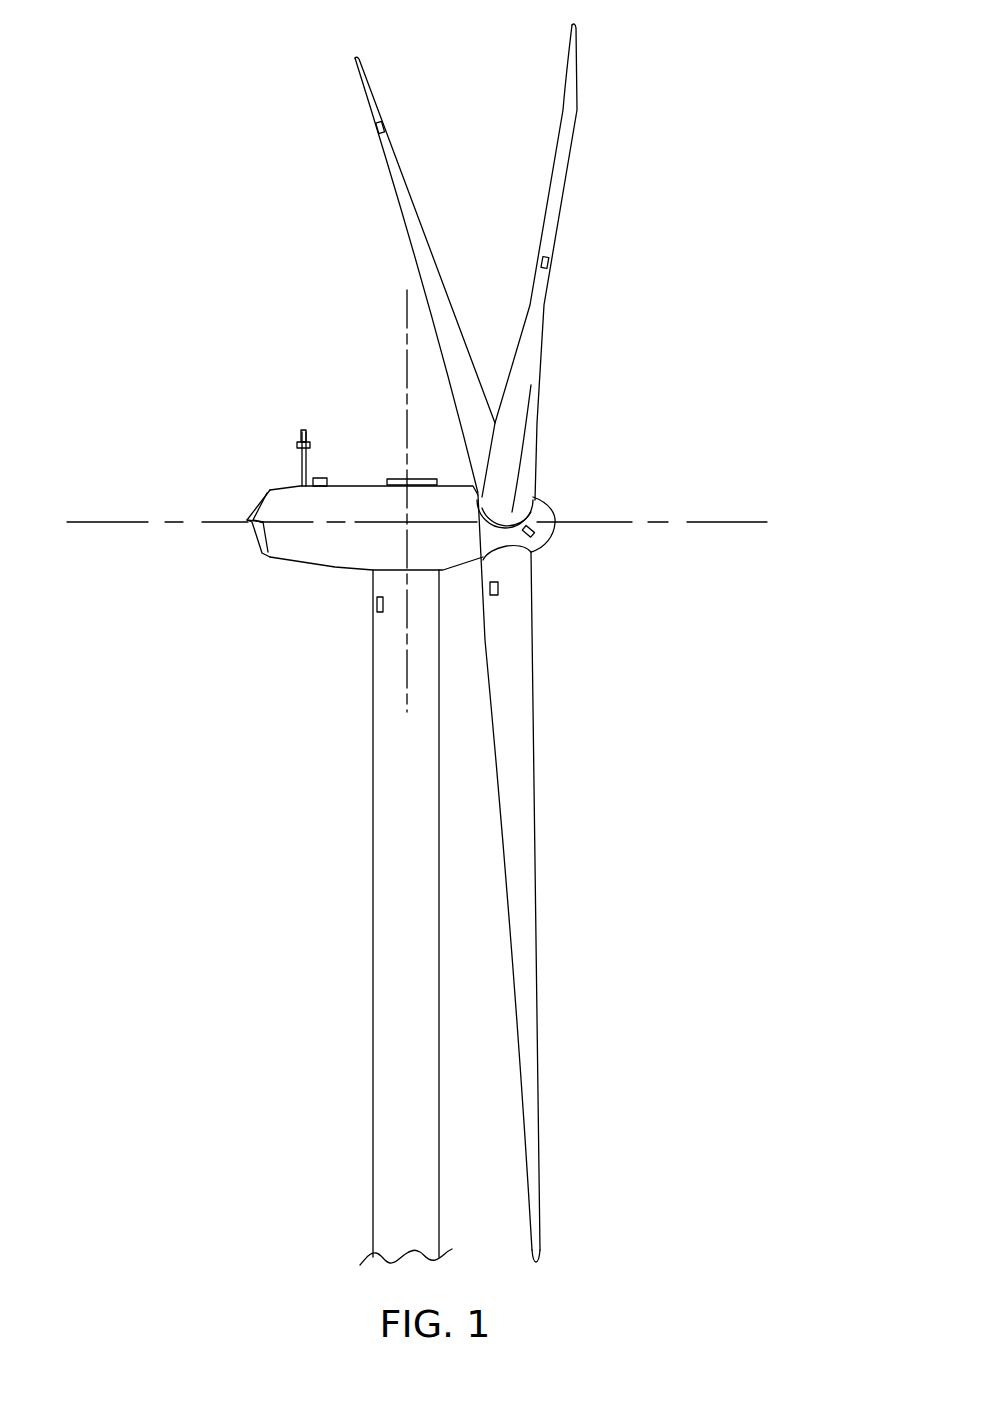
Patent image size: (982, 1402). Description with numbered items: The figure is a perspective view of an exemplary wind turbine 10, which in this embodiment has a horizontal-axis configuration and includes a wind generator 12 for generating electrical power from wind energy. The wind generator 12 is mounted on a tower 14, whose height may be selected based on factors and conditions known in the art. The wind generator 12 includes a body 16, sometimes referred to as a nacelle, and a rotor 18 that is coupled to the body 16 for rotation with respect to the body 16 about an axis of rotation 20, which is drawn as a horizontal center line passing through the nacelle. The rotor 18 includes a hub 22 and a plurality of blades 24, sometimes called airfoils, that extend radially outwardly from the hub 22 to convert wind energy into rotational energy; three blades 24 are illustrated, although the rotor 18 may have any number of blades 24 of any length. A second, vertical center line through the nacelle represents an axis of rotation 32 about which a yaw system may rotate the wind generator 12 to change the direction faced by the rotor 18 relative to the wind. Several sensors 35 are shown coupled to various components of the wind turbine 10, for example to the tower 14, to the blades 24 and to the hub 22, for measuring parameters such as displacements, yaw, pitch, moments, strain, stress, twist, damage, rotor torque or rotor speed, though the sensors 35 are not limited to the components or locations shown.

The wind turbine 10 is at (210, 281).
The wind generator 12 is at (363, 456).
The tower 14 is at (373, 860).
The body 16 is at (306, 575).
The rotor 18 is at (558, 589).
The axis of rotation 20 is at (710, 525).
The hub 22 is at (537, 534).
The blades 24 is at (393, 145).
The axis of rotation 32 is at (397, 310).
The sensors 35 is at (375, 127).